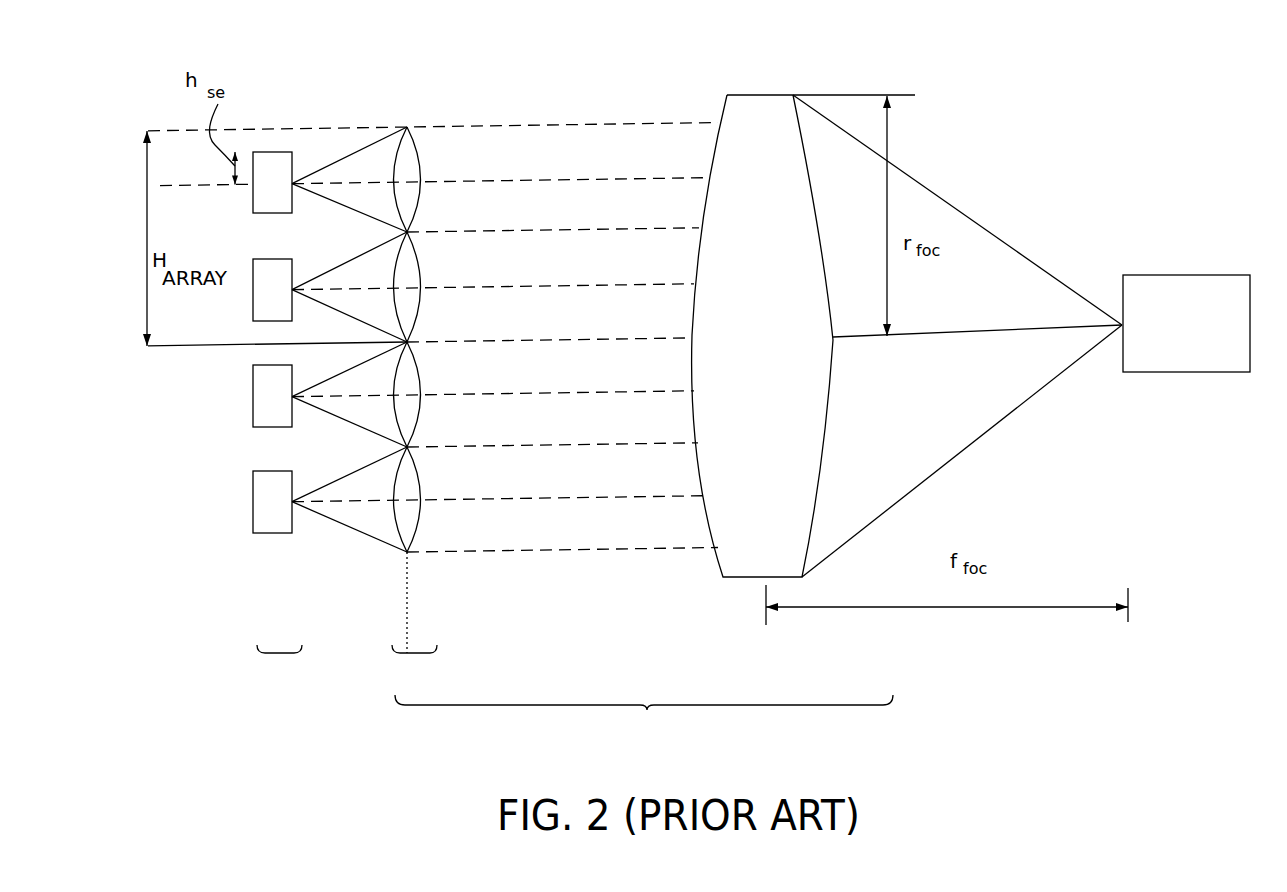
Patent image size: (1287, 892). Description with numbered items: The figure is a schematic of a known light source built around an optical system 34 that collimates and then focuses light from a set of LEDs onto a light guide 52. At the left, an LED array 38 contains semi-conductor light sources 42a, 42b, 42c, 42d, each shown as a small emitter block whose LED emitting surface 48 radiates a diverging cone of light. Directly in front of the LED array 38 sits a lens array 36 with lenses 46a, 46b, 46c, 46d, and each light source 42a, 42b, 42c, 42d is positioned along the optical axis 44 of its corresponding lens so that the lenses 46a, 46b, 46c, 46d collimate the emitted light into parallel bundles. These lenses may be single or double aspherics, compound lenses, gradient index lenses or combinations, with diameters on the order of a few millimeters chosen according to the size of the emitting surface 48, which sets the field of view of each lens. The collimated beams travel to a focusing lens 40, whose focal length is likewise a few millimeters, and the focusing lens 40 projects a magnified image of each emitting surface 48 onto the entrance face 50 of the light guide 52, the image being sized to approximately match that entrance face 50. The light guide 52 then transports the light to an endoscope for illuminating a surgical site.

The optical system 34 is at (648, 709).
The lens array 36 is at (407, 655).
The LED array 38 is at (273, 655).
The focusing lens 40 is at (768, 95).
The semi-conductor light source 42a is at (273, 152).
The semi-conductor light source 42b is at (283, 259).
The semi-conductor light source 42c is at (253, 387).
The semi-conductor light source 42d is at (283, 471).
The optical axis 44 is at (381, 182).
The lens 46a is at (420, 160).
The lens 46b is at (420, 270).
The lens 46c is at (420, 366).
The lens 46d is at (420, 473).
The LED emitting surface 48 is at (300, 195).
The entrance face 50 is at (1122, 298).
The light guide 52 is at (1190, 275).